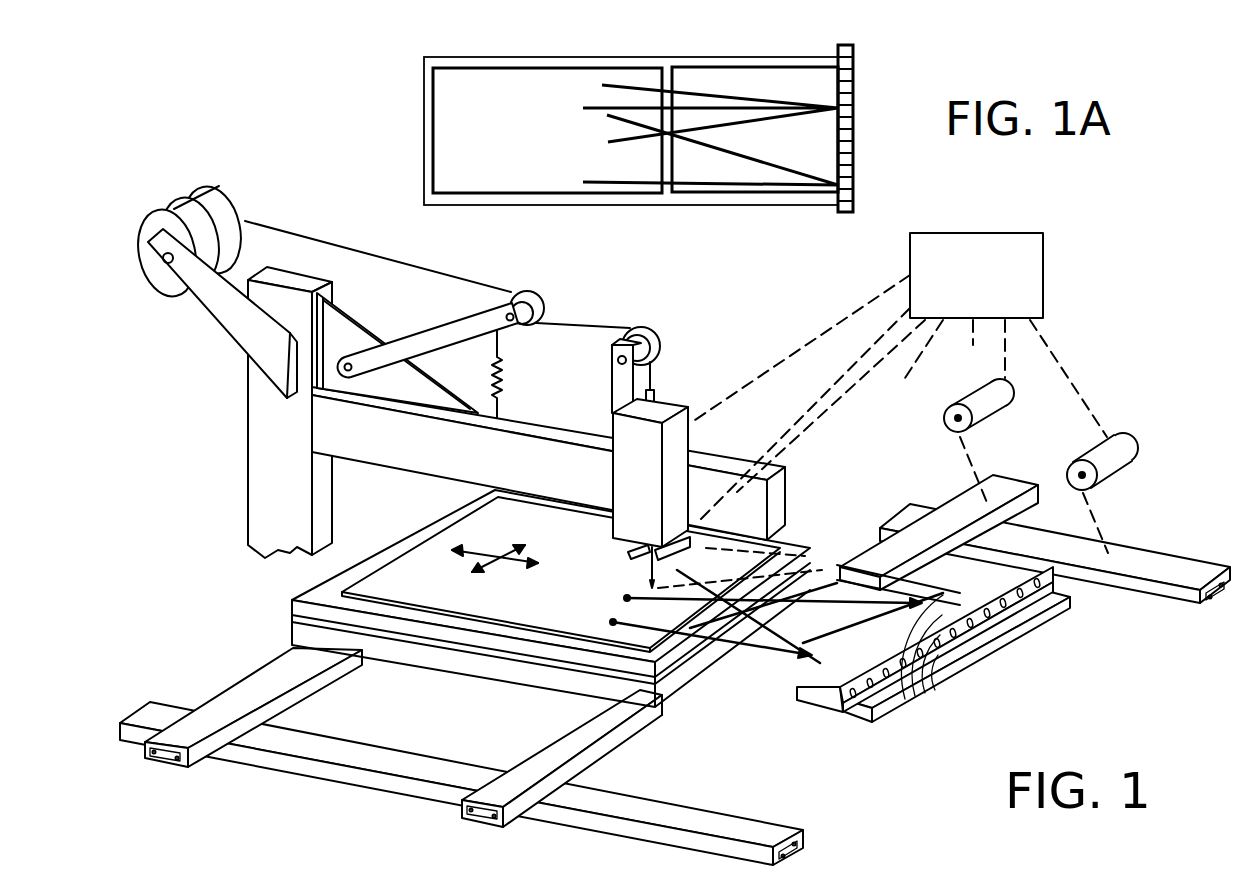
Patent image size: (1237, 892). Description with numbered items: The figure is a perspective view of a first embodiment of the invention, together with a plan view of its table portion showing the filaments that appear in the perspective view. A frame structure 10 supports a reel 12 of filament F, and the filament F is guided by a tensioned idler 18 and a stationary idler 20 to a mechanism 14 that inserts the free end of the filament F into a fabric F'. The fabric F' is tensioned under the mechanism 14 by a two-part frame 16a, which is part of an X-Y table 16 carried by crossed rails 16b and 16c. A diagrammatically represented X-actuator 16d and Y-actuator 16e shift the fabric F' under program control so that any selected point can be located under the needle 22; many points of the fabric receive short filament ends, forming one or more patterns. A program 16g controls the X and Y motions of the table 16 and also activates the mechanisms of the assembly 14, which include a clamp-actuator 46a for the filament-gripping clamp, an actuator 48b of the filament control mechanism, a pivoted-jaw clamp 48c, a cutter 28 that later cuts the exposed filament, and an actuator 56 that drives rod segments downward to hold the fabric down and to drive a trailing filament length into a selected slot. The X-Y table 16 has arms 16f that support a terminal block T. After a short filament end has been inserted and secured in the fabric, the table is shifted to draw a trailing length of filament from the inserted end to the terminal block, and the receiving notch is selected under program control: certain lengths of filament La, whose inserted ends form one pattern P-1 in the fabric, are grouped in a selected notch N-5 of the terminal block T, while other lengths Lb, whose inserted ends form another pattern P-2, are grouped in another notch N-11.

In FIG. 1, the frame structure 10 is at (260, 468).
In FIG. 1, the reel 12 is at (211, 190).
In FIG. 1, the mechanism 14 is at (684, 385).
In FIG. 1, the X-Y table 16 is at (673, 697).
In FIG. 1A, the two-part frame 16a is at (553, 57).
In FIG. 1, the two-part frame 16a is at (293, 632).
In FIG. 1, the rail 16b is at (268, 680).
In FIG. 1, the rail 16c is at (773, 815).
In FIG. 1, the X-actuator 16d is at (988, 422).
In FIG. 1, the Y-actuator 16e is at (1123, 452).
In FIG. 1A, the arms 16f is at (758, 60).
In FIG. 1, the arms 16f is at (763, 710).
In FIG. 1, the program 16g is at (1003, 288).
In FIG. 1, the tensioned idler 18 is at (527, 290).
In FIG. 1, the stationary idler 20 is at (647, 330).
In FIG. 1, the needle 22 is at (650, 580).
In FIG. 1, the cutter 28 is at (630, 558).
In FIG. 1, the clamp-actuator 46a is at (805, 414).
In FIG. 1, the actuator 48b is at (831, 406).
In FIG. 1, the pivoted-jaw clamp 48c is at (931, 355).
In FIG. 1, the actuator 56 is at (974, 344).
In FIG. 1, the filament F is at (437, 262).
In FIG. 1A, the fabric F' is at (547, 130).
In FIG. 1, the fabric F' is at (561, 574).
In FIG. 1A, the lengths of filament La is at (698, 107).
In FIG. 1, the lengths of filament La is at (925, 656).
In FIG. 1A, the lengths of filament Lb is at (720, 162).
In FIG. 1, the lengths of filament Lb is at (895, 690).
In FIG. 1A, the pattern P-1 is at (603, 84).
In FIG. 1, the pattern P-1 is at (625, 598).
In FIG. 1A, the pattern P-2 is at (608, 115).
In FIG. 1, the pattern P-2 is at (613, 624).
In FIG. 1A, the notch N-5 is at (845, 102).
In FIG. 1, the notch N-5 is at (960, 600).
In FIG. 1A, the notch N-11 is at (845, 183).
In FIG. 1, the notch N-11 is at (817, 660).
In FIG. 1A, the terminal block T is at (855, 142).
In FIG. 1, the terminal block T is at (998, 635).